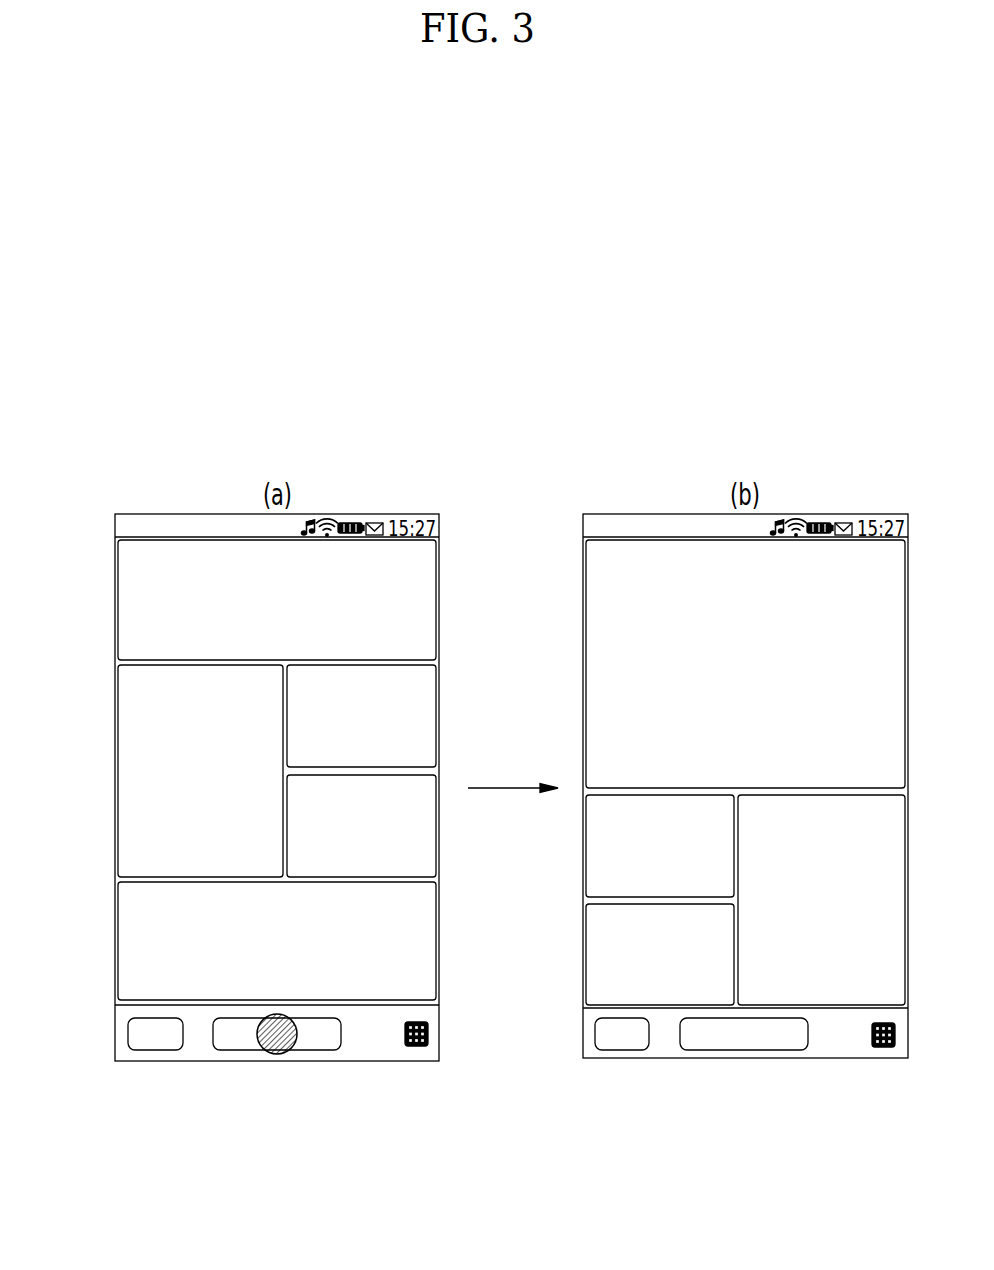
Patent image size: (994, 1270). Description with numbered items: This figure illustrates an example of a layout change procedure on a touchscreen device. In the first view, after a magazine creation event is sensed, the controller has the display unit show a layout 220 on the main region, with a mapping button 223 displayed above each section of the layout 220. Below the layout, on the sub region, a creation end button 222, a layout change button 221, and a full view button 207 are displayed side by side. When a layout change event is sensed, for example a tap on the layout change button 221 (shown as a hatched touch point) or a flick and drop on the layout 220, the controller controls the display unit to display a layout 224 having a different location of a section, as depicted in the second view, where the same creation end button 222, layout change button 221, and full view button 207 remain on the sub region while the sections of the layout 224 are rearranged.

The layout 220 is at (97, 550).
The layout 224 is at (565, 550).
The mapping button 223 is at (312, 590).
The creation end button 222 is at (128, 1027).
The layout change button 221 is at (310, 1050).
The full view button 207 is at (428, 1031).